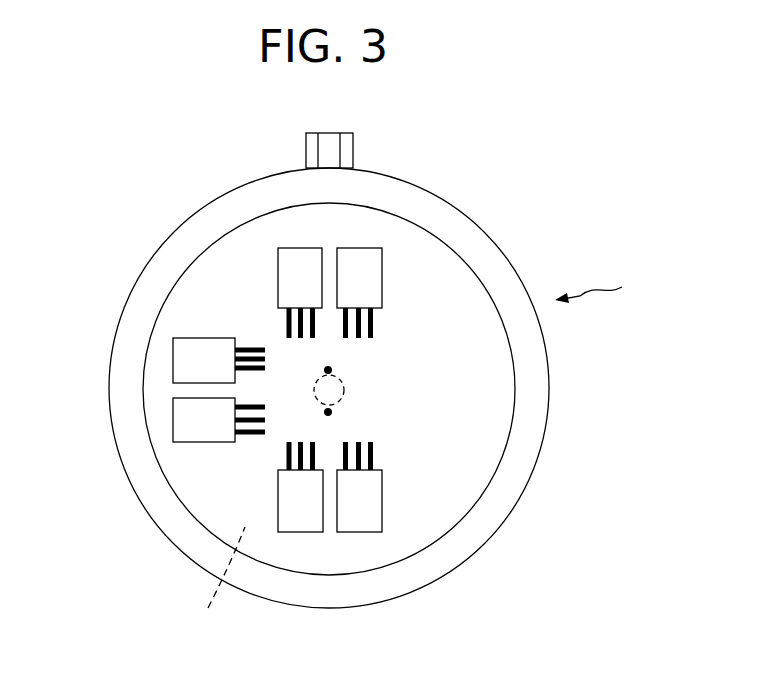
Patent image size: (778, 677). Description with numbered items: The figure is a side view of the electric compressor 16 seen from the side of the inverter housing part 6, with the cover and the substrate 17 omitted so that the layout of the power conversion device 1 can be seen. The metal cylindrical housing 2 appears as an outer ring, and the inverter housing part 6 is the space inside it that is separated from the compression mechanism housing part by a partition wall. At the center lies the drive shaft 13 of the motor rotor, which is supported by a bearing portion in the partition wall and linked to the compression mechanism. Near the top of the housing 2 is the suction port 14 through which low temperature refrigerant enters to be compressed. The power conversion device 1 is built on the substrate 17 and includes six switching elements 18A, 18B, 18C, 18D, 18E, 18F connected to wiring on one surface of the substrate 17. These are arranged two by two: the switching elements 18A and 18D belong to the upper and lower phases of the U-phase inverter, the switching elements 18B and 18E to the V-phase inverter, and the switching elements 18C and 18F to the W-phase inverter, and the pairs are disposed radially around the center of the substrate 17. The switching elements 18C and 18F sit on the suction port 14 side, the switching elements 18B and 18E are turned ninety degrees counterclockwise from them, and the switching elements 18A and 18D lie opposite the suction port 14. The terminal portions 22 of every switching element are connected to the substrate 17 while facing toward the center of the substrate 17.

The power conversion device 1 is at (472, 425).
The housing 2 is at (190, 227).
The inverter housing part 6 is at (455, 312).
The drive shaft 13 is at (316, 398).
The suction port 14 is at (317, 133).
The electric compressor 16 is at (608, 287).
The substrate 17 is at (214, 582).
The switching element 18A is at (298, 520).
The switching element 18B is at (195, 353).
The switching element 18C is at (358, 258).
The switching element 18D is at (357, 518).
The switching element 18E is at (187, 427).
The switching element 18F is at (290, 258).
The terminal portions 22 is at (283, 327).